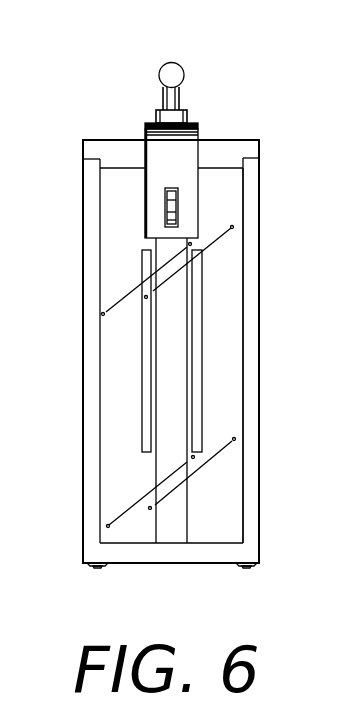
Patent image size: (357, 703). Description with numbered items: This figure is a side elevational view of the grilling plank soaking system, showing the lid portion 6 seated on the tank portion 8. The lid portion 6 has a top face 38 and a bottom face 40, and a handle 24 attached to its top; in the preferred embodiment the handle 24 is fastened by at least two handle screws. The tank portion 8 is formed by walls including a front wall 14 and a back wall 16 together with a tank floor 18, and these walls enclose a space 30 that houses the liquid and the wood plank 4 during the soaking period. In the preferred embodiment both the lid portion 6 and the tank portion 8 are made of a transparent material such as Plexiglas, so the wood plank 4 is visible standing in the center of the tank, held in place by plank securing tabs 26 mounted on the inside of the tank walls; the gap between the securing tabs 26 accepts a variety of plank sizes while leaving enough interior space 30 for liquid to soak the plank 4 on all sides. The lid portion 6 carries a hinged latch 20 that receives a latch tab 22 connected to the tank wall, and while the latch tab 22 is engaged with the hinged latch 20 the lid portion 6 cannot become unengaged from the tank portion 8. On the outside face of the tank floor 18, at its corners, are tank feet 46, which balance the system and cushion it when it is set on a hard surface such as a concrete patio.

The lid portion 6 is at (240, 150).
The top face 38 is at (118, 140).
The front wall 14 is at (82, 293).
The back wall 16 is at (260, 293).
The tank floor 18 is at (193, 563).
The bottom face 40 is at (102, 170).
The space 30 is at (225, 355).
The tank portion 8 is at (250, 435).
The wood plank 4 is at (169, 452).
The plank securing tabs 26 is at (147, 363).
The hinged latch 20 is at (188, 150).
The handle 24 is at (168, 63).
The latch tab 22 is at (172, 208).
The tank feet 46 is at (98, 568).